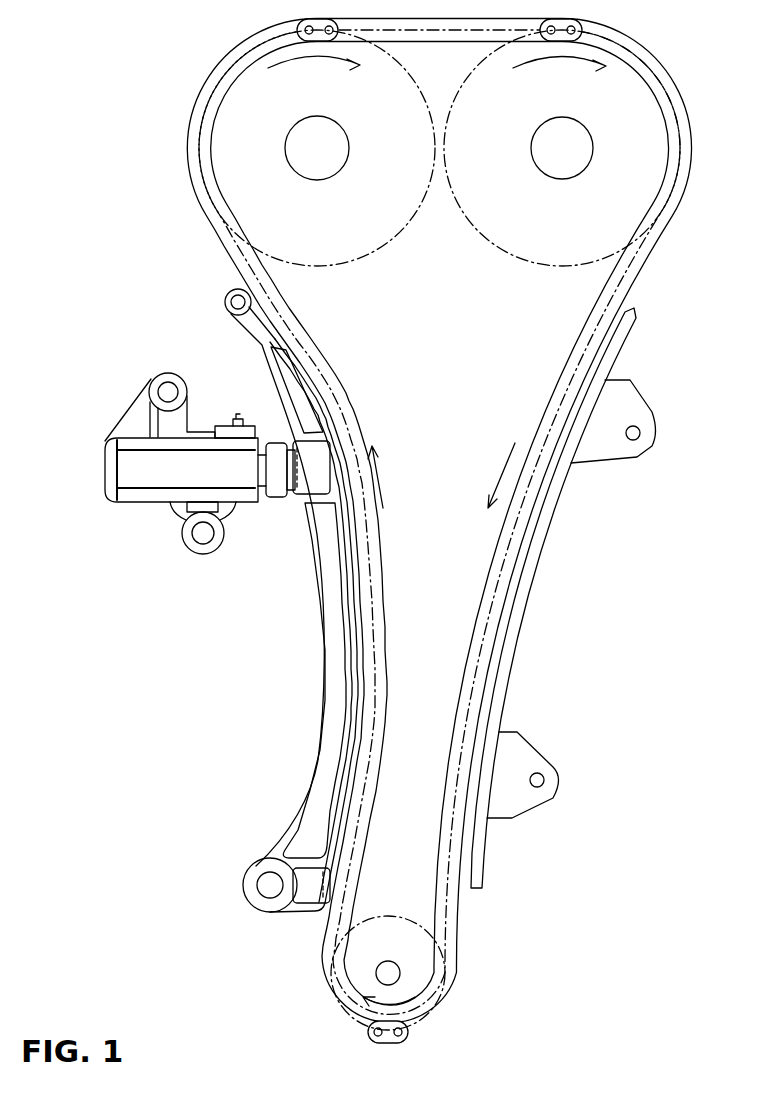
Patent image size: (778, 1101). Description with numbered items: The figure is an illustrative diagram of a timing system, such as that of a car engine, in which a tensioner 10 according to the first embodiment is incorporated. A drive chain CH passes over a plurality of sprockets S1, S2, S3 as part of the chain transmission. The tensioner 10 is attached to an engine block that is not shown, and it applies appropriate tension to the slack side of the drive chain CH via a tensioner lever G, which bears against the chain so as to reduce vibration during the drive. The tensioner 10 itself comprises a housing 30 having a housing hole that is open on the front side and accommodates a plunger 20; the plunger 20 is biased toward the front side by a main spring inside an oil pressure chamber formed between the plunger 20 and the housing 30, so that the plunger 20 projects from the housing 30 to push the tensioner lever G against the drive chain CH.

The tensioner 10 is at (193, 435).
The plunger 20 is at (260, 476).
The housing 30 is at (167, 476).
The tensioner lever G is at (330, 783).
The drive chain CH is at (630, 268).
The sprocket S1 is at (420, 975).
The sprocket S2 is at (240, 140).
The sprocket S3 is at (625, 132).